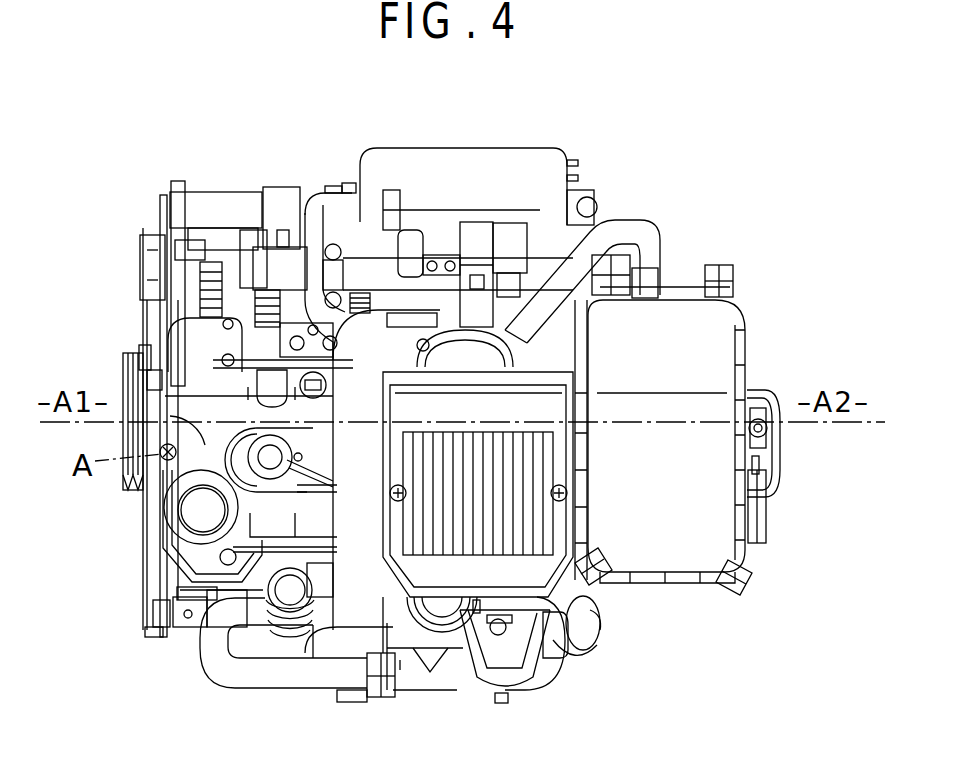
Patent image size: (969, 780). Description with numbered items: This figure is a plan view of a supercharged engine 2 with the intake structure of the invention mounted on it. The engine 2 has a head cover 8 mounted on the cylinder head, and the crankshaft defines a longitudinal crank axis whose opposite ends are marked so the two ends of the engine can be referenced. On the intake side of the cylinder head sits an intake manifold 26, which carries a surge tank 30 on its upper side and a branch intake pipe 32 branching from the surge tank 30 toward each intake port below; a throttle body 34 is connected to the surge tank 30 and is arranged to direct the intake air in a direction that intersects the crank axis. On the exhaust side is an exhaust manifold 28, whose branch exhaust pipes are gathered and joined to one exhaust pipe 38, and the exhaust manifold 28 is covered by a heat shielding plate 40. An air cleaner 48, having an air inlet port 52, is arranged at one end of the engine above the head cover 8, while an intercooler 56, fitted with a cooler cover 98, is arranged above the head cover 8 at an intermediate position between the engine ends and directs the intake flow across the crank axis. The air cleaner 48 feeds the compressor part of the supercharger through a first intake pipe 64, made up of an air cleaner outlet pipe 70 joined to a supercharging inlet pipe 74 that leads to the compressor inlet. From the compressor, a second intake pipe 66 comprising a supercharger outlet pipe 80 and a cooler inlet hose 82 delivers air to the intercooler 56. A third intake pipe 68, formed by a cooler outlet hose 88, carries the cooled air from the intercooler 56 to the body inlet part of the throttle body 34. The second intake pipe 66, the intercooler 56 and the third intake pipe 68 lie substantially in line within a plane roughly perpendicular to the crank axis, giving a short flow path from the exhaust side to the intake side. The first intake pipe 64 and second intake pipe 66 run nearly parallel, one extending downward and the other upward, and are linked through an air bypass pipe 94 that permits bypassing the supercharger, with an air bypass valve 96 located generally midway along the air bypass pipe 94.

The engine 2 is at (729, 174).
The head cover 8 is at (172, 480).
The intake manifold 26 is at (322, 206).
The exhaust manifold 28 is at (177, 582).
The surge tank 30 is at (470, 162).
The branch intake pipe 32 is at (345, 190).
The throttle body 34 is at (520, 215).
The exhaust pipe 38 is at (585, 620).
The heat shielding plate 40 is at (517, 647).
The air cleaner 48 is at (692, 590).
The air inlet port 52 is at (764, 533).
The intercooler 56 is at (594, 521).
The first intake pipe 64 is at (326, 417).
The second intake pipe 66 is at (440, 656).
The third intake pipe 68 is at (618, 217).
The air cleaner outlet pipe 70 is at (236, 357).
The supercharging inlet pipe 74 is at (333, 648).
The supercharger outlet pipe 80 is at (383, 667).
The cooler inlet hose 82 is at (478, 672).
The cooler outlet hose 88 is at (470, 318).
The air bypass pipe 94 is at (226, 673).
The air bypass valve 96 is at (292, 592).
The cooler cover 98 is at (545, 400).